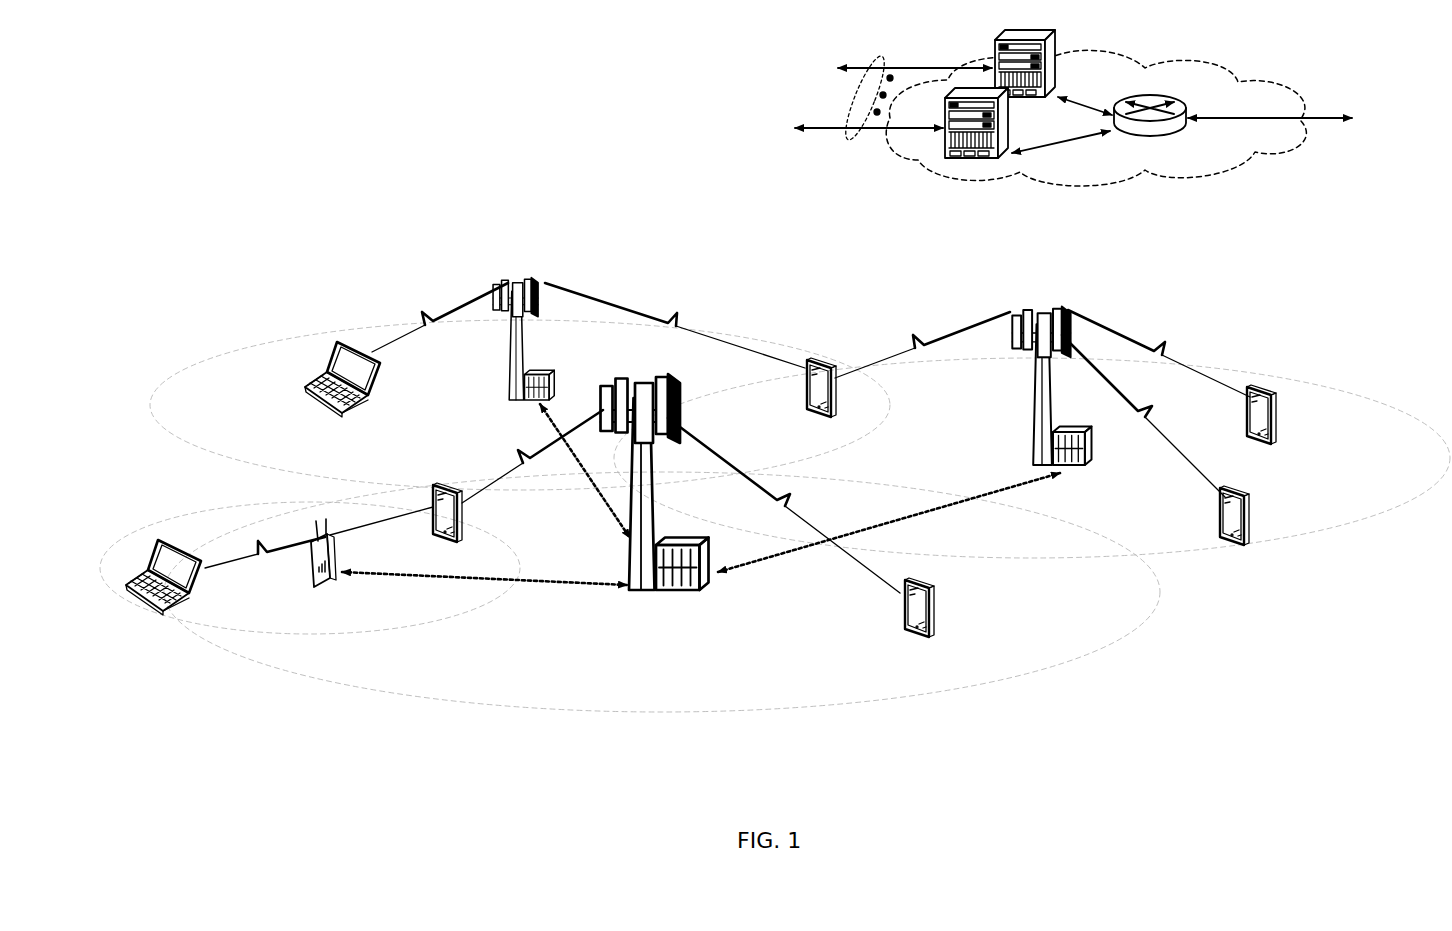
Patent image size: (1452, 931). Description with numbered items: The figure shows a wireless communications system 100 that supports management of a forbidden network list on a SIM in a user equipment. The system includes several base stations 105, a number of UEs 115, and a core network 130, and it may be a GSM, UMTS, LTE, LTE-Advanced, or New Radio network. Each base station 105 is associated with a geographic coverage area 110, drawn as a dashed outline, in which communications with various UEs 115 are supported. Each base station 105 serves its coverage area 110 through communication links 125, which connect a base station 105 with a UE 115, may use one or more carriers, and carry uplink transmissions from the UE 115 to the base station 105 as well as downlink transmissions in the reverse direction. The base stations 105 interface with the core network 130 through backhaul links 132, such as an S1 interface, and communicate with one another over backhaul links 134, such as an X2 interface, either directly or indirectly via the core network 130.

The wireless communications system 100 is at (1297, 762).
The base station 105 is at (510, 388).
The geographic coverage area 110 is at (188, 443).
The UE 115 is at (330, 410).
The communication link 125 is at (430, 316).
The core network 130 is at (1117, 177).
The backhaul link 132 is at (830, 145).
The backhaul link 134 is at (583, 478).